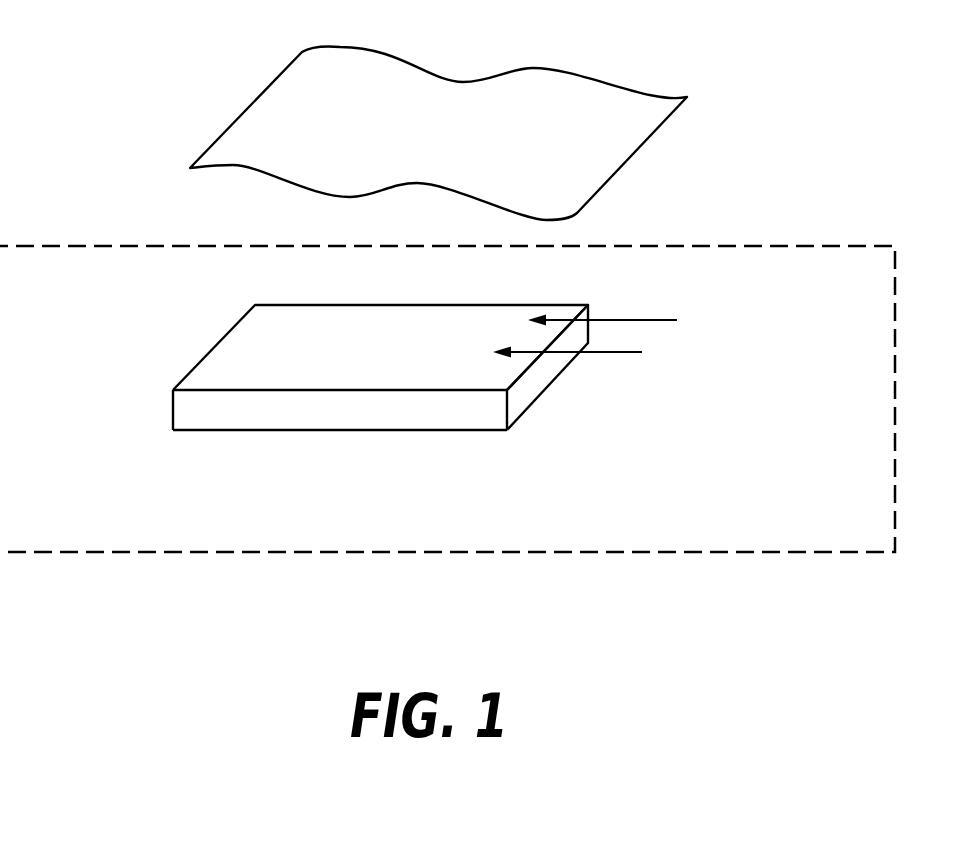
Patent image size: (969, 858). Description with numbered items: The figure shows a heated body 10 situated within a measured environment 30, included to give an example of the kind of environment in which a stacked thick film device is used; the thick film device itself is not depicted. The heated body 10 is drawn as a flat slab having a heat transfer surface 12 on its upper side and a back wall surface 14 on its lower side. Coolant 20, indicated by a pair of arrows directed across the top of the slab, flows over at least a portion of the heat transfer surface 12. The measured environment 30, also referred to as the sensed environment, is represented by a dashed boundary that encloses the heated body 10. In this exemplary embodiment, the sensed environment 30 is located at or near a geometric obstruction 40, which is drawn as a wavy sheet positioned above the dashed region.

The heated body 10 is at (347, 405).
The heat transfer surface 12 is at (263, 357).
The back wall surface 14 is at (452, 433).
The coolant 20 is at (605, 336).
The measured environment 30 is at (800, 245).
The geometric obstruction 40 is at (605, 90).